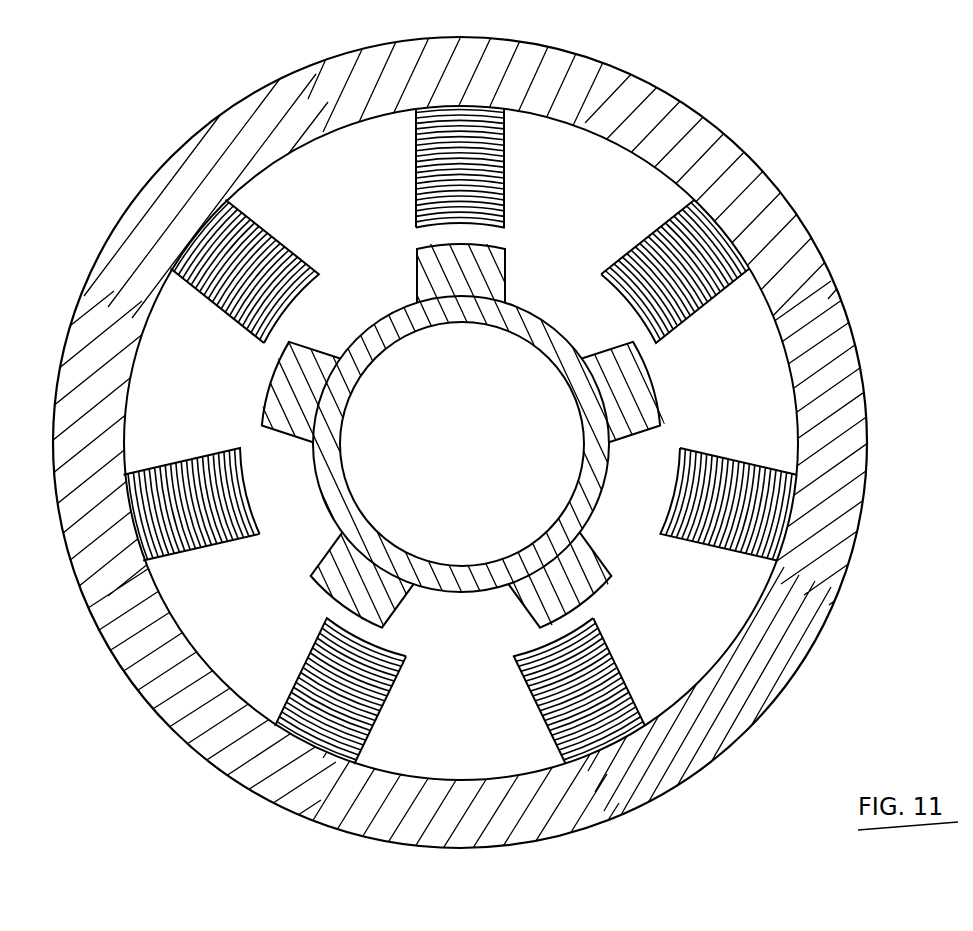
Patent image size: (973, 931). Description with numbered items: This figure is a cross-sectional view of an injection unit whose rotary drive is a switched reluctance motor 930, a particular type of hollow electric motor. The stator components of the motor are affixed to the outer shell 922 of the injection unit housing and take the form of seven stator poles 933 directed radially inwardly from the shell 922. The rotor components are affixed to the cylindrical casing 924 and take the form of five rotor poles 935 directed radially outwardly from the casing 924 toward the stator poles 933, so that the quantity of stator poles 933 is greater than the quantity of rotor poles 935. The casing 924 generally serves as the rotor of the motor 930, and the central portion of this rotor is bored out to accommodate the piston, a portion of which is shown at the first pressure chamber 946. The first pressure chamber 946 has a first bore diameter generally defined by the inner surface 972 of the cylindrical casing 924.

The switched reluctance motor 930 is at (469, 442).
The outer shell 922 is at (800, 228).
The stator poles 933 is at (494, 205).
The rotor poles 935 is at (495, 278).
The cylindrical casing 924 is at (466, 440).
The inner surface 972 is at (513, 337).
The first pressure chamber 946 is at (483, 455).